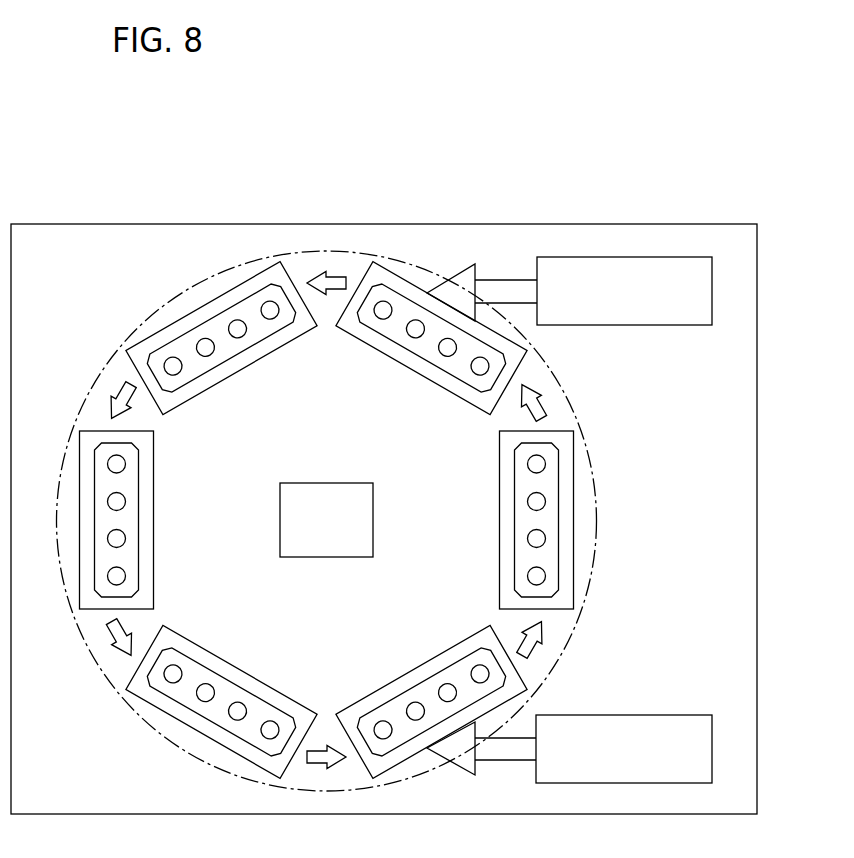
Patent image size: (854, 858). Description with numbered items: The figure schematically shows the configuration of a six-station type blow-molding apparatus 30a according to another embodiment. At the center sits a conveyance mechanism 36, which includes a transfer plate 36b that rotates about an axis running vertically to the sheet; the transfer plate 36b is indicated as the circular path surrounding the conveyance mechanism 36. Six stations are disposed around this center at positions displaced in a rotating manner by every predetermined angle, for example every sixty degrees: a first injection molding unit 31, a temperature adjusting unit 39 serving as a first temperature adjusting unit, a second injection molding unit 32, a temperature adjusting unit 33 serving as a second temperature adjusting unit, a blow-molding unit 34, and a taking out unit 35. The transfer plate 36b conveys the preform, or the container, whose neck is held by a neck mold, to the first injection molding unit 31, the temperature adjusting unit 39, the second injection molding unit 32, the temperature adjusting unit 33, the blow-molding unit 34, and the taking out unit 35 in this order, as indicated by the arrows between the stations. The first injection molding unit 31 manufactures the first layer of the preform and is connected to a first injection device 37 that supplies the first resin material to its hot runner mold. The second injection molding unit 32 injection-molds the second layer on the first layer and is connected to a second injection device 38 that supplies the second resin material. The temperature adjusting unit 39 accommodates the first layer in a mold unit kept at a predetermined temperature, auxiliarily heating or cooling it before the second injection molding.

The blow-molding apparatus 30a is at (630, 222).
The first injection molding unit 31 is at (405, 674).
The second injection molding unit 32 is at (405, 366).
The temperature adjusting unit 33 is at (248, 366).
The blow-molding unit 34 is at (155, 516).
The taking out unit 35 is at (248, 674).
The temperature adjusting unit 39 is at (497, 517).
The conveyance mechanism 36 is at (320, 557).
The transfer plate 36b is at (597, 543).
The first injection device 37 is at (645, 715).
The second injection device 38 is at (645, 326).